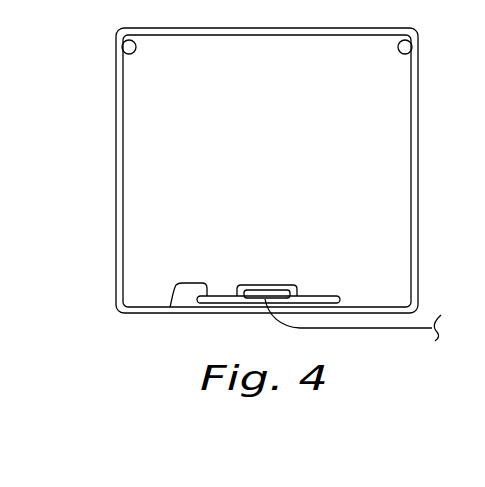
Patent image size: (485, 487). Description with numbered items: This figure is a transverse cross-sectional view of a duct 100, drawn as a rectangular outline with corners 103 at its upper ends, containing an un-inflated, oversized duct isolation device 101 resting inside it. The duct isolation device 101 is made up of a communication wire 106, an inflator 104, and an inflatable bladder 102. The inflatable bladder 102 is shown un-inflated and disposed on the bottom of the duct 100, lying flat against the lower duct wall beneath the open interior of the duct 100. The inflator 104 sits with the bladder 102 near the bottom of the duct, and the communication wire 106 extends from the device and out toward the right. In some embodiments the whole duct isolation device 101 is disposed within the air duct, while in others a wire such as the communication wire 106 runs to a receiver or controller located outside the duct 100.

The duct 100 is at (117, 139).
The duct isolation device 101 is at (157, 245).
The inflatable bladder 102 is at (171, 308).
The corners 103 is at (126, 60).
The inflator 104 is at (263, 295).
The communication wire 106 is at (367, 328).